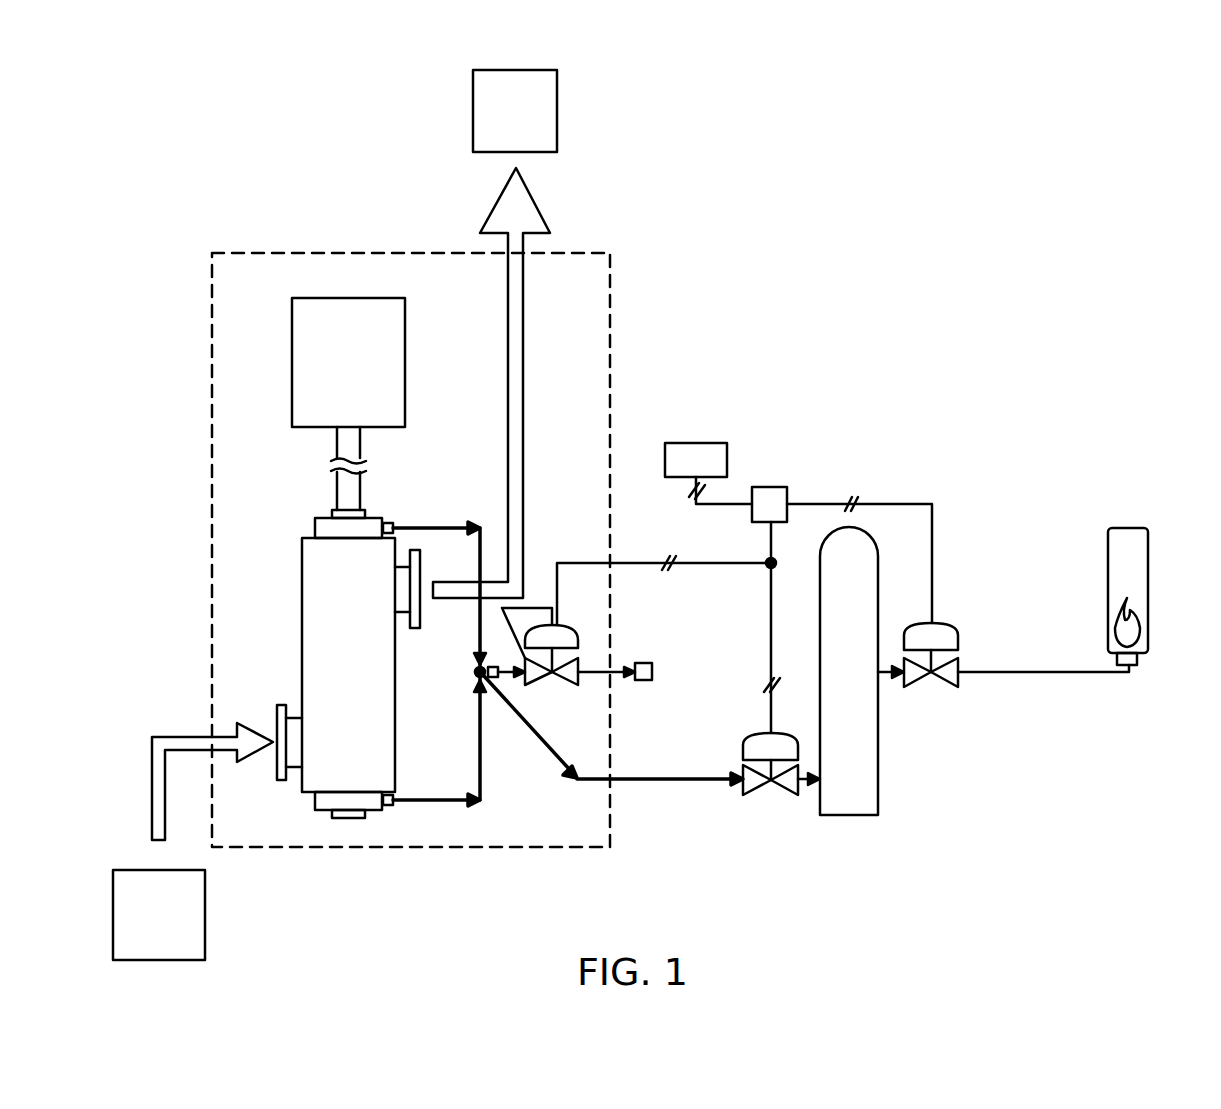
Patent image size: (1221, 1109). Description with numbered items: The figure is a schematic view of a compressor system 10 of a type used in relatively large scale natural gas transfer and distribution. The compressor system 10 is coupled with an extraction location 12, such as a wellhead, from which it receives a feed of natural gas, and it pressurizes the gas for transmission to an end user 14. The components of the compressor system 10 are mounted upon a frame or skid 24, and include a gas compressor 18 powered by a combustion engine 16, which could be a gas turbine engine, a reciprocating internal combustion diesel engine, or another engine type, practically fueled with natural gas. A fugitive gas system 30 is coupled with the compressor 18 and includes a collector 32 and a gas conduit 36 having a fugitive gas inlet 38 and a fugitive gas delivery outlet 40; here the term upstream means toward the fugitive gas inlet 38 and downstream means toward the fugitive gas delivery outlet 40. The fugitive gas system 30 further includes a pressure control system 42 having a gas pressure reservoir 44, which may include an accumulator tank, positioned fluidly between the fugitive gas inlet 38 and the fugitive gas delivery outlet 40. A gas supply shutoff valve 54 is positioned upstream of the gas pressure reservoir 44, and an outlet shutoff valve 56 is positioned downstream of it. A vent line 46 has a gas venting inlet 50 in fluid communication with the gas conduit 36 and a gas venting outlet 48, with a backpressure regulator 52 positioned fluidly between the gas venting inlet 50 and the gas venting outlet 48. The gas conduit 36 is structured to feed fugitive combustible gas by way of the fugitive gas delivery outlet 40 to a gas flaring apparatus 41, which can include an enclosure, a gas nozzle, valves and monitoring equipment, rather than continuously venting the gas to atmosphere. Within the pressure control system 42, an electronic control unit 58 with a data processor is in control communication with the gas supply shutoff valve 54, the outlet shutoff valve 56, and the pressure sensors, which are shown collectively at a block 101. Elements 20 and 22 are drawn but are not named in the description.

The compressor system 10 is at (642, 395).
The extraction location 12 is at (205, 885).
The end user 14 is at (557, 78).
The combustion engine 16 is at (268, 351).
The gas compressor 18 is at (268, 627).
The inlet flange 20 is at (277, 772).
The outlet flange 22 is at (420, 618).
The frame or skid 24 is at (437, 848).
The fugitive gas system 30 is at (795, 847).
The collector 32 is at (315, 527).
The gas conduit 36 is at (596, 792).
The fugitive gas inlet 38 is at (387, 523).
The fugitive gas delivery outlet 40 is at (1137, 656).
The gas flaring apparatus 41 is at (1148, 590).
The pressure control system 42 is at (832, 478).
The gas pressure reservoir 44 is at (878, 778).
The vent line 46 is at (592, 688).
The gas venting outlet 48 is at (644, 663).
The gas venting inlet 50 is at (482, 668).
The backpressure regulator 52 is at (560, 625).
The gas supply shutoff valve 54 is at (752, 733).
The outlet shutoff valve 56 is at (948, 623).
The electronic control unit 58 is at (773, 487).
The block 101 is at (710, 443).